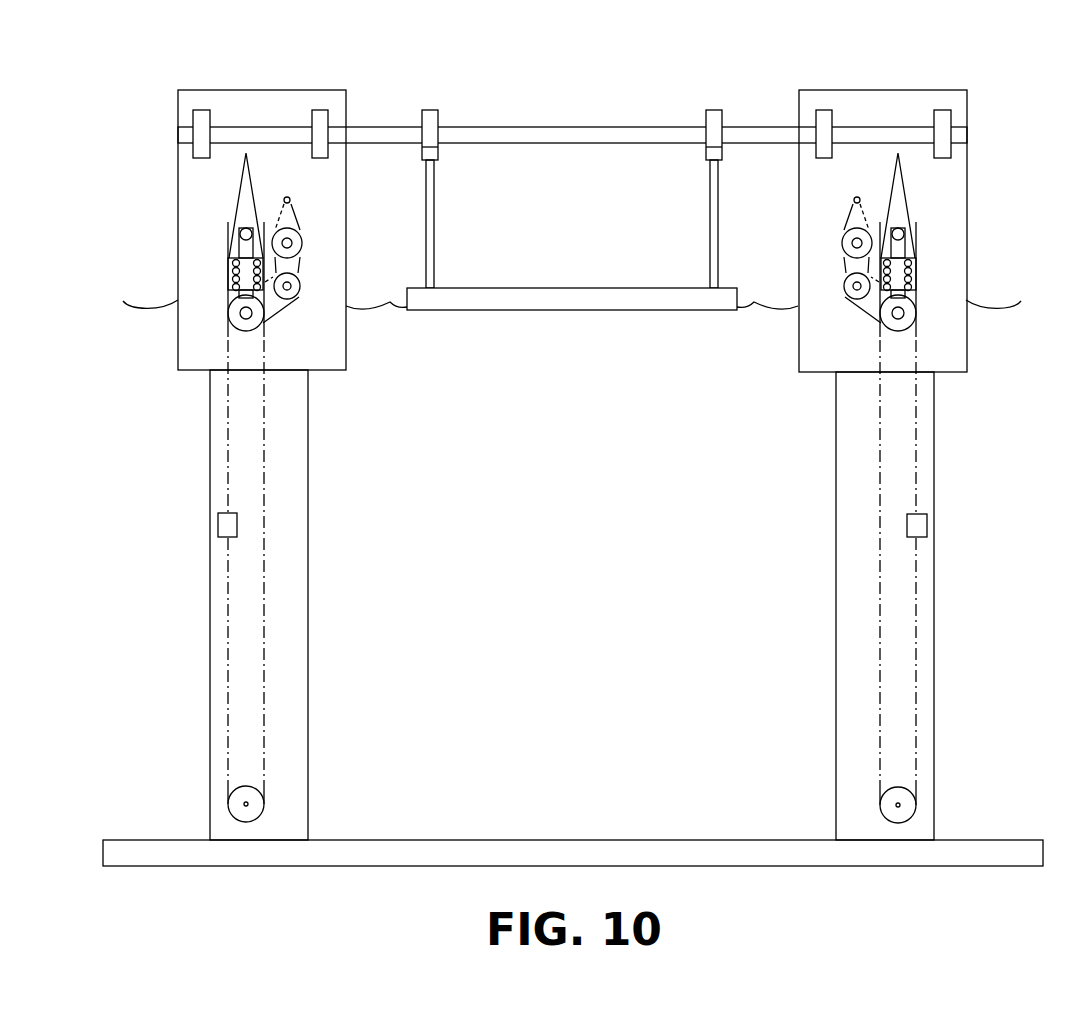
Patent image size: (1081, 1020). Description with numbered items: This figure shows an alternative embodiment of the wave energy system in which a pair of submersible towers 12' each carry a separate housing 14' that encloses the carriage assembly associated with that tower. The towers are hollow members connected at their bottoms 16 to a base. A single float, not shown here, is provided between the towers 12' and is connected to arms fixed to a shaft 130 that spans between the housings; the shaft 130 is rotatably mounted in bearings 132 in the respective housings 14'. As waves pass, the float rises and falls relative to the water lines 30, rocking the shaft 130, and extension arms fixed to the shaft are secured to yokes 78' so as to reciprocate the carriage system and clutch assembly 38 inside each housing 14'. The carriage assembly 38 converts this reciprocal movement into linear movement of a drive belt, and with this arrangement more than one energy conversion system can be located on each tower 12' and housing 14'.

The towers 12' is at (614, 590).
The housing 14' is at (615, 222).
The bottoms 16 is at (565, 300).
The water lines 30 is at (955, 228).
The carriage system and clutch assembly 38 is at (317, 252).
The yokes 78' is at (571, 198).
The shaft 130 is at (548, 127).
The bearings 132 is at (208, 110).